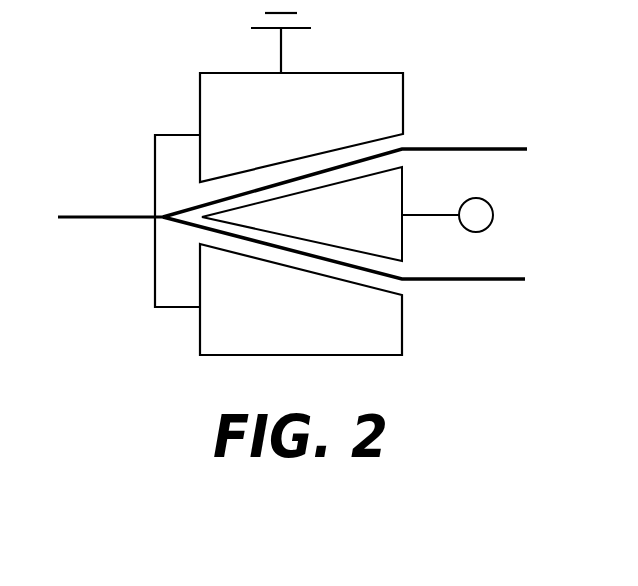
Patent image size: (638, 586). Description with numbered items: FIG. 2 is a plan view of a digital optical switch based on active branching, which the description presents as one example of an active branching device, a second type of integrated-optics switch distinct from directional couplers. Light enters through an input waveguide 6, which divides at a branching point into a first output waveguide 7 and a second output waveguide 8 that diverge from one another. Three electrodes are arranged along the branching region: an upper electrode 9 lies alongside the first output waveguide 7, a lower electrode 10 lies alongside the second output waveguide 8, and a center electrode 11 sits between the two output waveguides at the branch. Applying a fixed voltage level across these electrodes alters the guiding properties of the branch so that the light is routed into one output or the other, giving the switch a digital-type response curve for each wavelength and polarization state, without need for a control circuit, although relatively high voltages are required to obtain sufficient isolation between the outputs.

The input waveguide 6 is at (100, 216).
The first output waveguide 7 is at (488, 149).
The second output waveguide 8 is at (472, 281).
The upper electrode 9 is at (395, 88).
The lower electrode 10 is at (392, 328).
The center electrode 11 is at (388, 230).